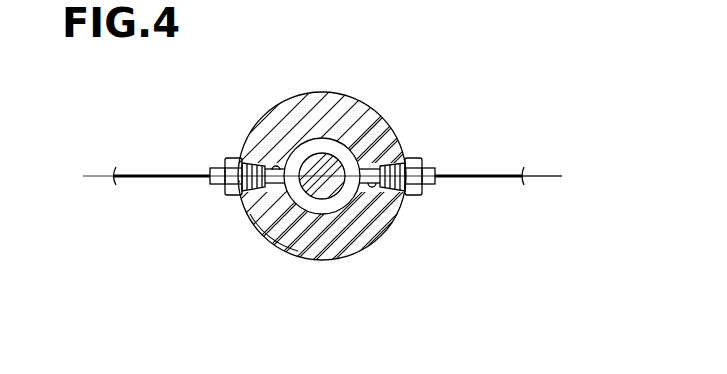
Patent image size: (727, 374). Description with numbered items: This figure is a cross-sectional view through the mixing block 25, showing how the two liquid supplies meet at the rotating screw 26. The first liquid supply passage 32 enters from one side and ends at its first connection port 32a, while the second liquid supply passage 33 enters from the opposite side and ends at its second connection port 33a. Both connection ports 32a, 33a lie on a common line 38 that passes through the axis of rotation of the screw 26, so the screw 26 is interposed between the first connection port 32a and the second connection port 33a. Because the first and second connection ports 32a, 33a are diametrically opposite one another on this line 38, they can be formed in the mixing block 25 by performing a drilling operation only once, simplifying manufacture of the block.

The mixing block 25 is at (322, 100).
The screw 26 is at (324, 197).
The first liquid supply passage 32 is at (160, 175).
The first connection port 32a is at (280, 168).
The second liquid supply passage 33 is at (478, 174).
The second connection port 33a is at (373, 186).
The line 38 is at (543, 177).